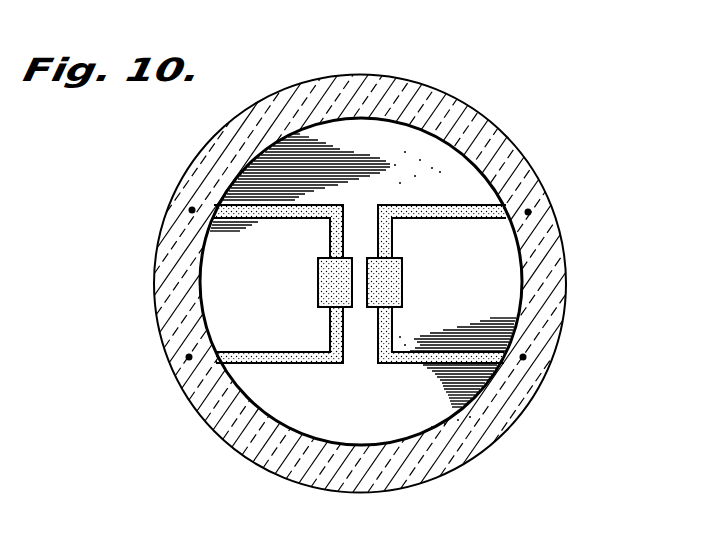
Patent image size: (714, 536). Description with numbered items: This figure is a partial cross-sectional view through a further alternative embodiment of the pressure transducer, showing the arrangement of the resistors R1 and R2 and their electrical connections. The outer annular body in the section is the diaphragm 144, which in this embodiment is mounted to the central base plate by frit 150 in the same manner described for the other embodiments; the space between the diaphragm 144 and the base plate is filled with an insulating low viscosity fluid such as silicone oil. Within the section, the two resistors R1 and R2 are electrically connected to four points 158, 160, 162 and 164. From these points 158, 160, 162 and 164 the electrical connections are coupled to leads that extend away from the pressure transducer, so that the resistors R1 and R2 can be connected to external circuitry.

The diaphragm 144 is at (337, 135).
The frit 150 is at (432, 98).
The connection point 158 is at (192, 210).
The connection point 160 is at (528, 212).
The connection point 162 is at (523, 357).
The connection point 164 is at (189, 357).
The resistor R1 is at (318, 283).
The resistor R2 is at (402, 283).